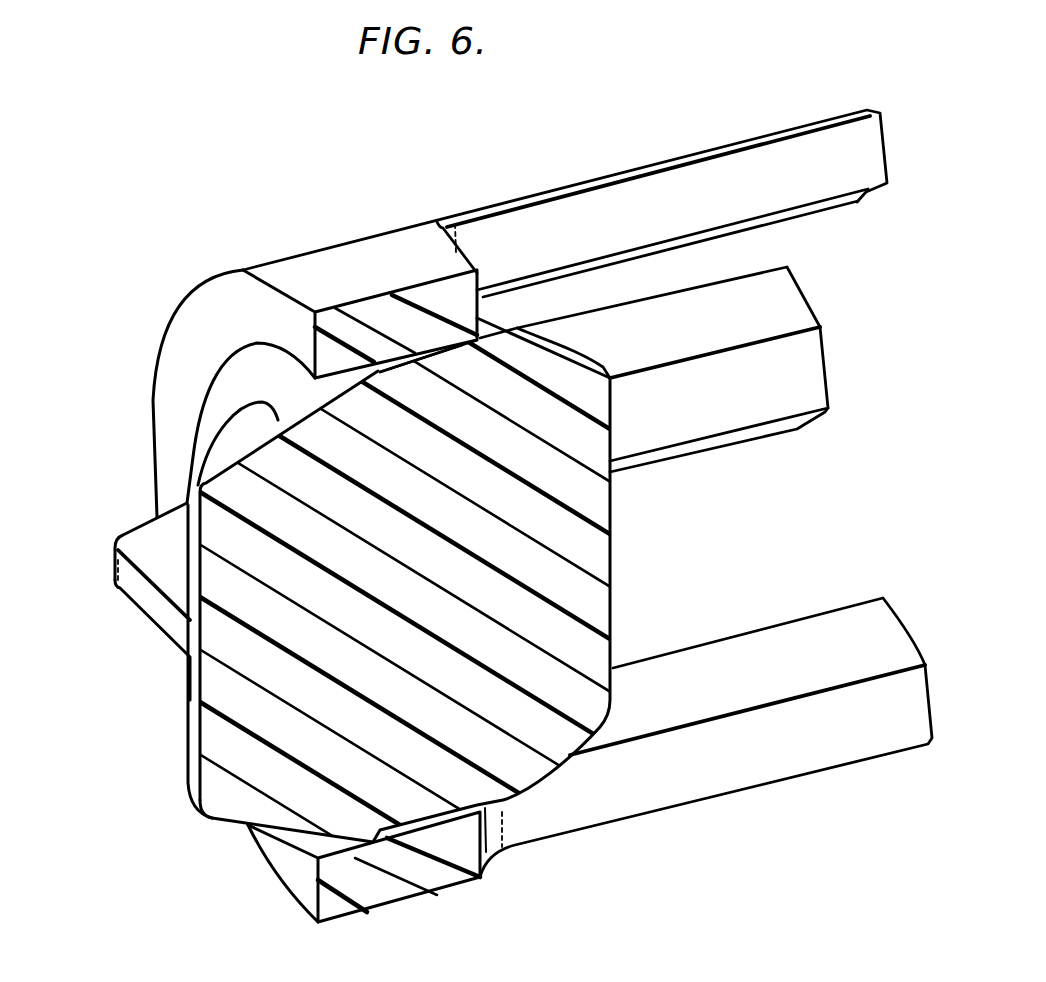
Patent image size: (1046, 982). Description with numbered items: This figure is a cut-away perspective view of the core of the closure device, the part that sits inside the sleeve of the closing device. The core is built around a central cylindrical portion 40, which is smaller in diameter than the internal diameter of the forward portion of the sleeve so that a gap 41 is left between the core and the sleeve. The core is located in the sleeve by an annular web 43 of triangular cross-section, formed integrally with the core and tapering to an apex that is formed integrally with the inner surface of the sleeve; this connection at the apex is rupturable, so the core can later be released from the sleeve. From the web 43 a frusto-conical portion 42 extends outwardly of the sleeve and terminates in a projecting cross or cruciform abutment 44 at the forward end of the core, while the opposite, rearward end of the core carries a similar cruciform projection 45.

The central cylindrical portion 40 is at (127, 512).
The gap 41 is at (450, 400).
The frusto-conical portion 42 is at (457, 347).
The annular web 43 is at (245, 273).
The cruciform abutment 44 is at (143, 597).
The cruciform projection 45 is at (583, 550).